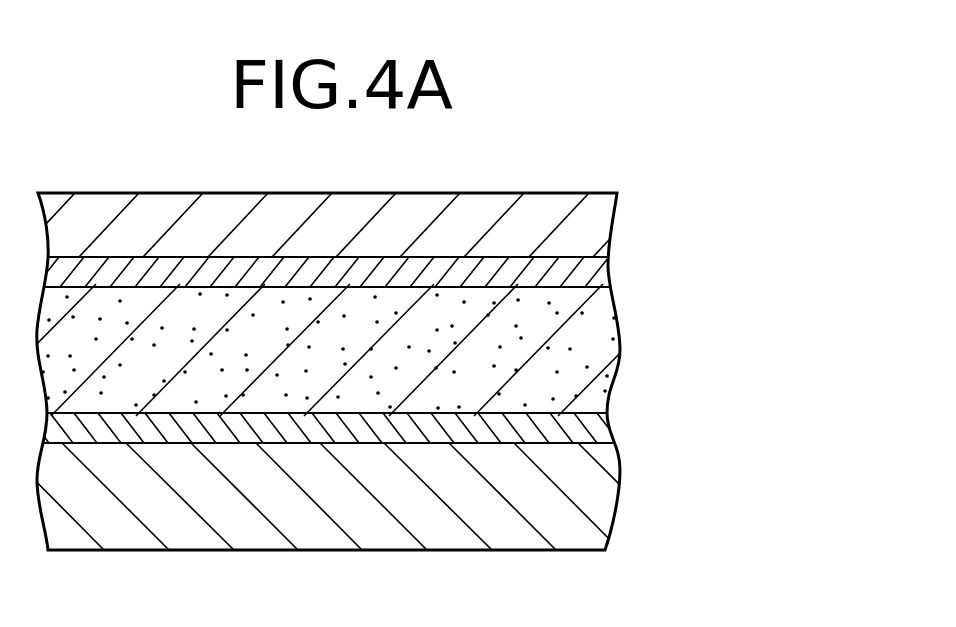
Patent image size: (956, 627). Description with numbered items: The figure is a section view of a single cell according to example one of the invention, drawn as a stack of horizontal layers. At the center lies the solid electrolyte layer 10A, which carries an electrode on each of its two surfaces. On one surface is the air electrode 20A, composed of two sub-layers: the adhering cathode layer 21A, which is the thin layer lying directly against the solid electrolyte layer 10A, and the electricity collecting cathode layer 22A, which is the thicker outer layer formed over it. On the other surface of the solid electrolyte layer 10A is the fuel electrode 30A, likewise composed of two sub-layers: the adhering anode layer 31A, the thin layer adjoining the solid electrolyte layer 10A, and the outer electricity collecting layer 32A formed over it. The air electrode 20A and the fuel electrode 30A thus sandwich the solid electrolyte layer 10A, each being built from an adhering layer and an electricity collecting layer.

The electricity collecting cathode layer 22A is at (590, 228).
The adhering cathode layer 21A is at (590, 272).
The air electrode 20A is at (765, 203).
The solid electrolyte layer 10A is at (590, 343).
The adhering anode layer 31A is at (590, 428).
The electricity collecting cathode layer 32A is at (590, 497).
The fuel electrode 30A is at (765, 407).